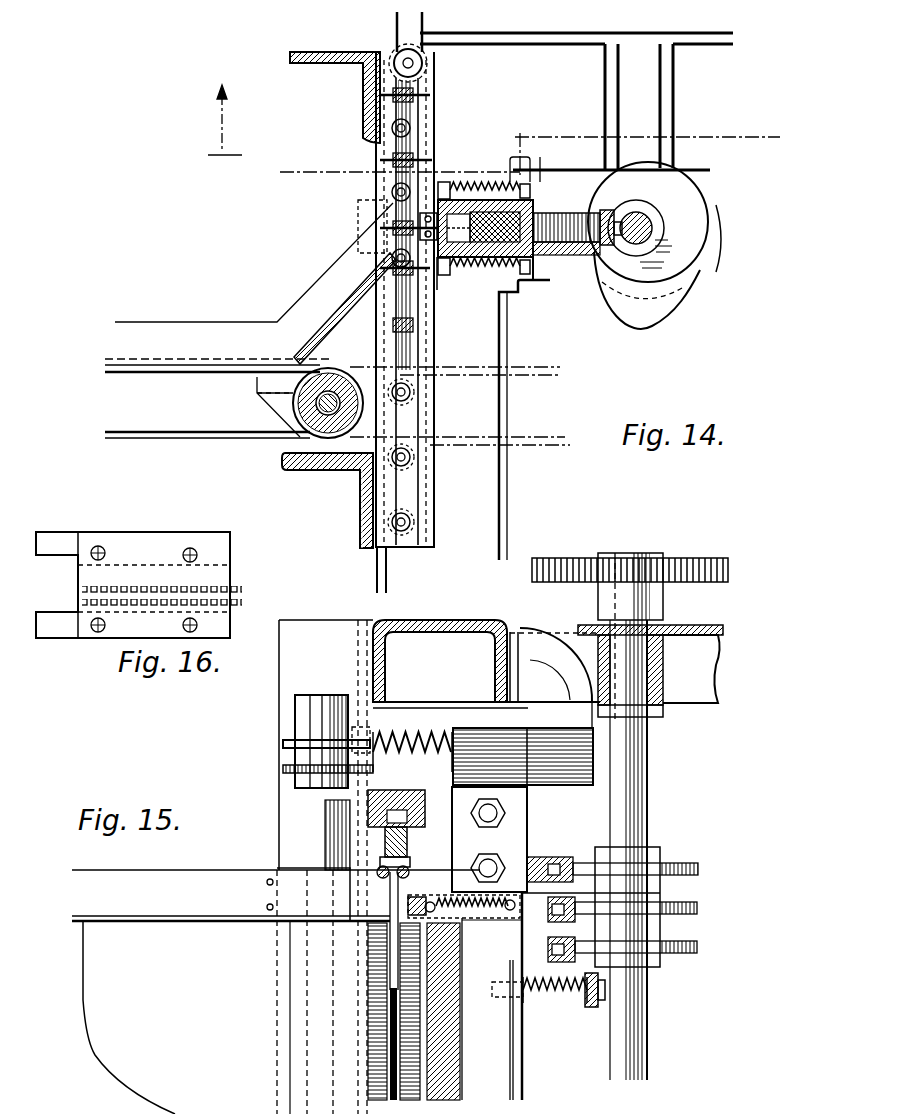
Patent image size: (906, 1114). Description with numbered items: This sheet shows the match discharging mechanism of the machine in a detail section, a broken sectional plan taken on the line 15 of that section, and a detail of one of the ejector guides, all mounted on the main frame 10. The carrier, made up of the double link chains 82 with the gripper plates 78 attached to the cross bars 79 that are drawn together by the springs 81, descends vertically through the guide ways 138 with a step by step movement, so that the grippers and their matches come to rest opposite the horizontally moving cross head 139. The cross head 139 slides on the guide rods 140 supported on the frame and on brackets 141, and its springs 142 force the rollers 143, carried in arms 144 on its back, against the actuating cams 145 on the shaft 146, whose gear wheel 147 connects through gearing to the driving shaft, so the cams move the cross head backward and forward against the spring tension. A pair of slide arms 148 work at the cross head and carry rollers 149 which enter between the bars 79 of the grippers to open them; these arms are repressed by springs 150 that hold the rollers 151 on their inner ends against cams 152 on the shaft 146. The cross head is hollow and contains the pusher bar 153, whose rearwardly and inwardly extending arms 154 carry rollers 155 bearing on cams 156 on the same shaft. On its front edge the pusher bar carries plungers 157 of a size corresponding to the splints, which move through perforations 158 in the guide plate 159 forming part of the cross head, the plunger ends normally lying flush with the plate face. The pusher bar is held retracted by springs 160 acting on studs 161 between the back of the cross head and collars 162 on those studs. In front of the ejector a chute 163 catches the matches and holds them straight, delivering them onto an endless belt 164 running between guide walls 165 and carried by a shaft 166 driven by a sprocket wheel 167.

In FIG. 14, the frame 10 is at (505, 532).
In FIG. 15, the frame 10 is at (498, 625).
In FIG. 14, the section line 15 is at (204, 127).
In FIG. 14, the plates 78 is at (425, 153).
In FIG. 15, the cross bars 79 is at (405, 878).
In FIG. 15, the springs 81 is at (410, 868).
In FIG. 14, the double link chains 82 is at (405, 549).
In FIG. 15, the double link chains 82 is at (382, 830).
In FIG. 14, the guide ways 138 is at (423, 120).
In FIG. 15, the guide ways 138 is at (370, 808).
In FIG. 14, the cross head 139 is at (533, 198).
In FIG. 15, the cross head 139 is at (510, 817).
In FIG. 15, the guide rods 140 is at (453, 728).
In FIG. 15, the brackets 141 is at (530, 717).
In FIG. 15, the springs 142 is at (420, 732).
In FIG. 15, the rollers 143 is at (574, 858).
In FIG. 15, the arms 144 is at (538, 862).
In FIG. 15, the actuating cams 145 is at (640, 850).
In FIG. 15, the shaft 146 is at (633, 772).
In FIG. 15, the gear wheel 147 is at (700, 568).
In FIG. 15, the slide arms 148 is at (600, 893).
In FIG. 14, the rollers 149 is at (415, 292).
In FIG. 15, the rollers 149 is at (452, 900).
In FIG. 14, the springs 150 is at (476, 182).
In FIG. 15, the springs 150 is at (476, 918).
In FIG. 15, the rollers 151 is at (558, 930).
In FIG. 15, the cams 152 is at (698, 909).
In FIG. 14, the pusher bar 153 is at (562, 283).
In FIG. 15, the arms 154 is at (514, 986).
In FIG. 15, the rollers 155 is at (568, 962).
In FIG. 15, the cams 156 is at (698, 948).
In FIG. 14, the plungers 157 is at (459, 279).
In FIG. 15, the plungers 157 is at (462, 1032).
In FIG. 16, the perforations 158 is at (236, 590).
In FIG. 16, the guide plate 159 is at (225, 610).
In FIG. 14, the springs 160 is at (566, 213).
In FIG. 15, the springs 160 is at (560, 1004).
In FIG. 14, the studs 161 is at (614, 226).
In FIG. 15, the studs 161 is at (604, 988).
In FIG. 15, the collars 162 is at (588, 1008).
In FIG. 14, the chute 163 is at (327, 290).
In FIG. 14, the endless carrier or belt 164 is at (208, 366).
In FIG. 15, the endless carrier or belt 164 is at (95, 999).
In FIG. 14, the guide walls 165 is at (160, 336).
In FIG. 15, the guide walls 165 is at (163, 916).
In FIG. 14, the shaft 166 is at (300, 412).
In FIG. 15, the shaft 166 is at (320, 790).
In FIG. 15, the sprocket wheel 167 is at (295, 752).